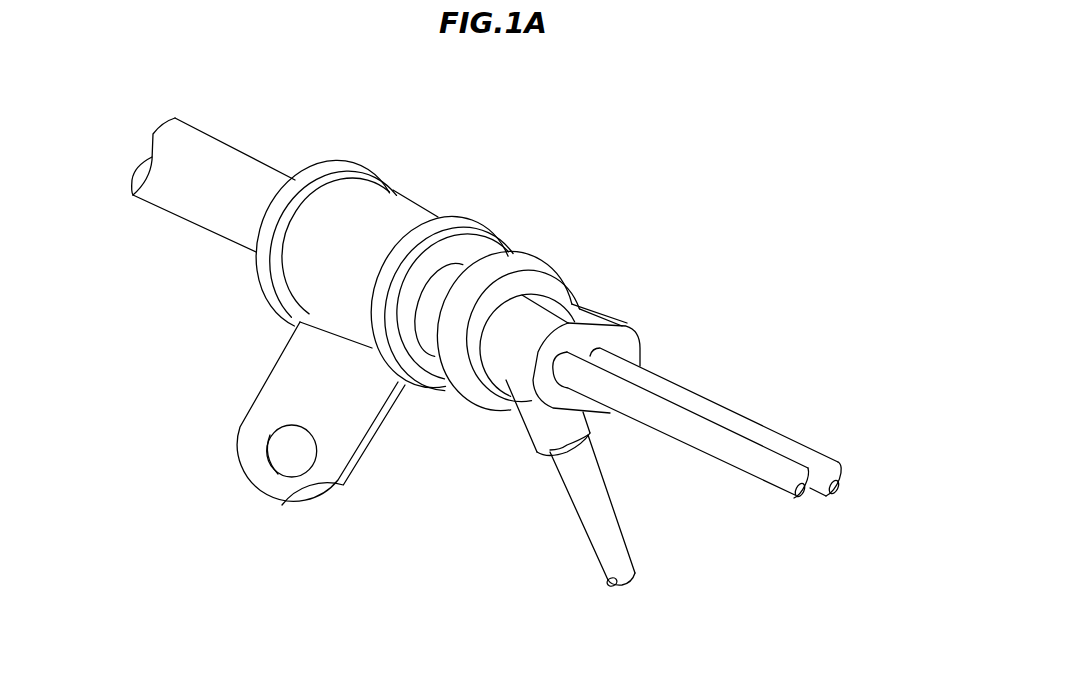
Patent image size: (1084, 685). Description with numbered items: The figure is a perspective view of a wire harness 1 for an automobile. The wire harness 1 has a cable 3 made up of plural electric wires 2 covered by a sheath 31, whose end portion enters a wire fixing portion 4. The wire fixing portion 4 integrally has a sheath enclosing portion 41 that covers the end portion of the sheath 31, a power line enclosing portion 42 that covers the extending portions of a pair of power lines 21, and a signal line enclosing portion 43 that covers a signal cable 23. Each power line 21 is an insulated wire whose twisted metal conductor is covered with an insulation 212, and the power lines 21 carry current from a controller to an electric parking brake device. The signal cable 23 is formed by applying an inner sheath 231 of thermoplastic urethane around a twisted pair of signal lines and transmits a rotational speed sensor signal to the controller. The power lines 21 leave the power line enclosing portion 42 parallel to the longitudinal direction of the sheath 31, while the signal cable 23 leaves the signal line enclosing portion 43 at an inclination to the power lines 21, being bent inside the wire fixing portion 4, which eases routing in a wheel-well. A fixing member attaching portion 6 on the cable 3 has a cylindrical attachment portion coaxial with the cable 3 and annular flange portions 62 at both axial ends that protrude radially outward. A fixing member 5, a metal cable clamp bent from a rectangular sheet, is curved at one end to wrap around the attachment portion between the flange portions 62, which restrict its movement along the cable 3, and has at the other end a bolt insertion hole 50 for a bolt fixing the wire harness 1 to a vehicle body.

The wire harness 1 is at (668, 148).
The electric wires 2 is at (733, 400).
The power lines 21 is at (792, 435).
The insulation 212 is at (778, 482).
The signal cable 23 is at (583, 533).
The inner sheath 231 is at (607, 576).
The cable 3 is at (192, 227).
The sheath 31 is at (157, 197).
The wire fixing portion 4 is at (565, 348).
The sheath enclosing portion 41 is at (525, 268).
The power line enclosing portion 42 is at (645, 322).
The signal line enclosing portion 43 is at (538, 430).
The fixing member 5 is at (257, 400).
The bolt insertion hole 50 is at (268, 443).
The fixing member attaching portion 6 is at (519, 233).
The flange portions 62 is at (340, 161).